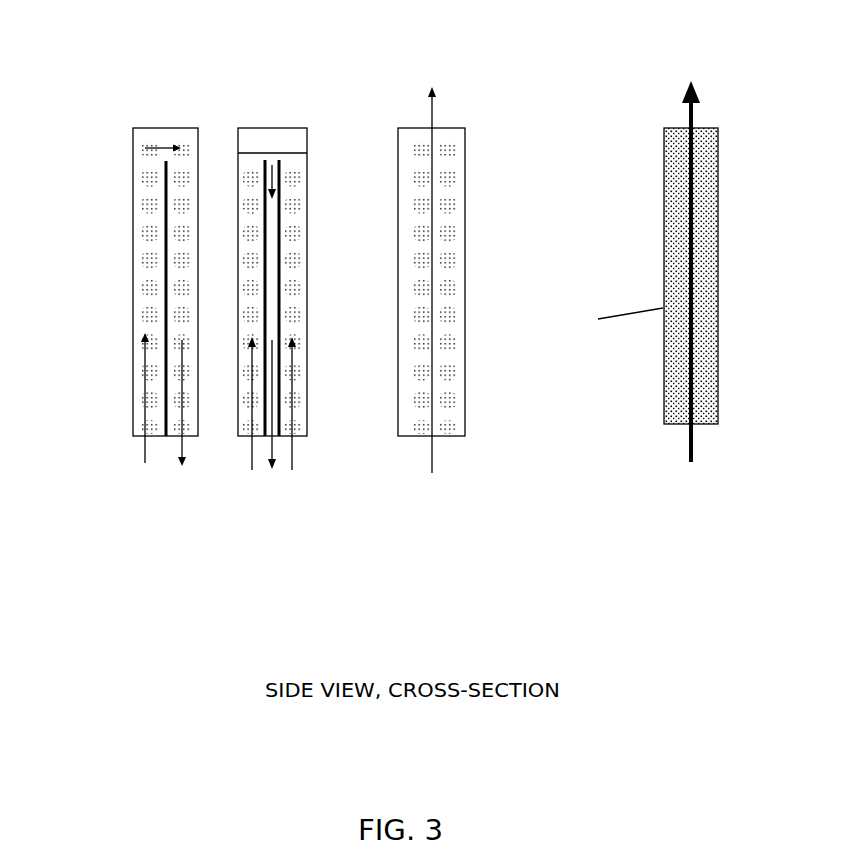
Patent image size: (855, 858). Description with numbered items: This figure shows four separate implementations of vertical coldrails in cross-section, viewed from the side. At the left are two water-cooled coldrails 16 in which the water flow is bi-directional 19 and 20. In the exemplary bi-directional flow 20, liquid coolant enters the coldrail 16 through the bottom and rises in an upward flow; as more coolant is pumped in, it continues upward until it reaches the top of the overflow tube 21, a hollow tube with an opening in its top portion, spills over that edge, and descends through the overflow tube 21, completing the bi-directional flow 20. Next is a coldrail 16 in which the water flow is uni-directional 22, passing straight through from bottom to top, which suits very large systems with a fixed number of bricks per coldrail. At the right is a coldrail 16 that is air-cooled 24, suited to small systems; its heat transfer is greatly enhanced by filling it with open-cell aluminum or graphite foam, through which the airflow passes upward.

The coldrail 16 is at (173, 124).
The bi-directional water flow 19 is at (133, 431).
The bi-directional flow 20 is at (307, 413).
The overflow tube 21 is at (284, 194).
The uni-directional water flow 22 is at (458, 553).
The air-cooled coldrail 24 is at (679, 554).